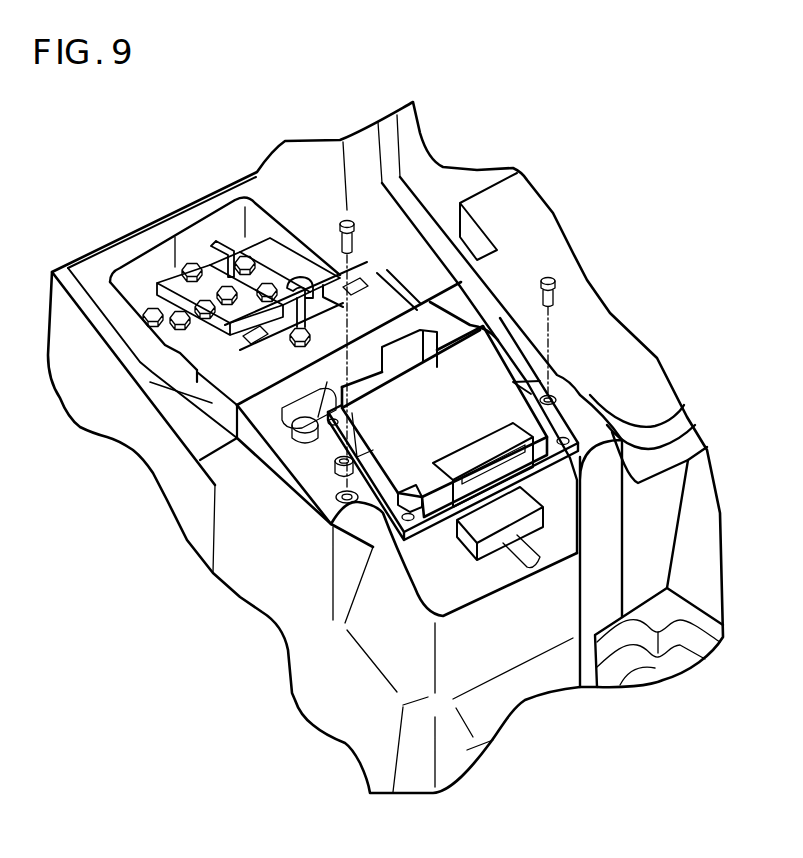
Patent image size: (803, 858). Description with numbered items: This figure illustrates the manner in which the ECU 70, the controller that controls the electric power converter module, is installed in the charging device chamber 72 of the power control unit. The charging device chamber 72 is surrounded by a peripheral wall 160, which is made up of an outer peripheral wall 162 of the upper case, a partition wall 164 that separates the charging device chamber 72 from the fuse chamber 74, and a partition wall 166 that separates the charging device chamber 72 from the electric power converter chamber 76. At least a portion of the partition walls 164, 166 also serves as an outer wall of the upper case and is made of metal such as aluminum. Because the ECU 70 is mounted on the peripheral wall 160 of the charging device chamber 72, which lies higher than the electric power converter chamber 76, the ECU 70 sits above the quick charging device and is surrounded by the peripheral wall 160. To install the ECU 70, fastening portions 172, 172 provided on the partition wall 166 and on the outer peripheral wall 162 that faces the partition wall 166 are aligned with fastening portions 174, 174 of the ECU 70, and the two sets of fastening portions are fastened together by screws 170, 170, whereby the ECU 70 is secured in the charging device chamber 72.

The ECU 70 is at (453, 435).
The charging device chamber 72 is at (437, 561).
The fuse chamber 74 is at (213, 238).
The electric power converter chamber 76 is at (598, 318).
The peripheral wall 160 is at (491, 657).
The outer peripheral wall 162 is at (385, 651).
The partition wall 164 is at (408, 355).
The partition wall 166 is at (570, 425).
The screw 170 is at (340, 222).
The fastening portion 172 is at (340, 500).
The fastening portion 174 is at (338, 470).